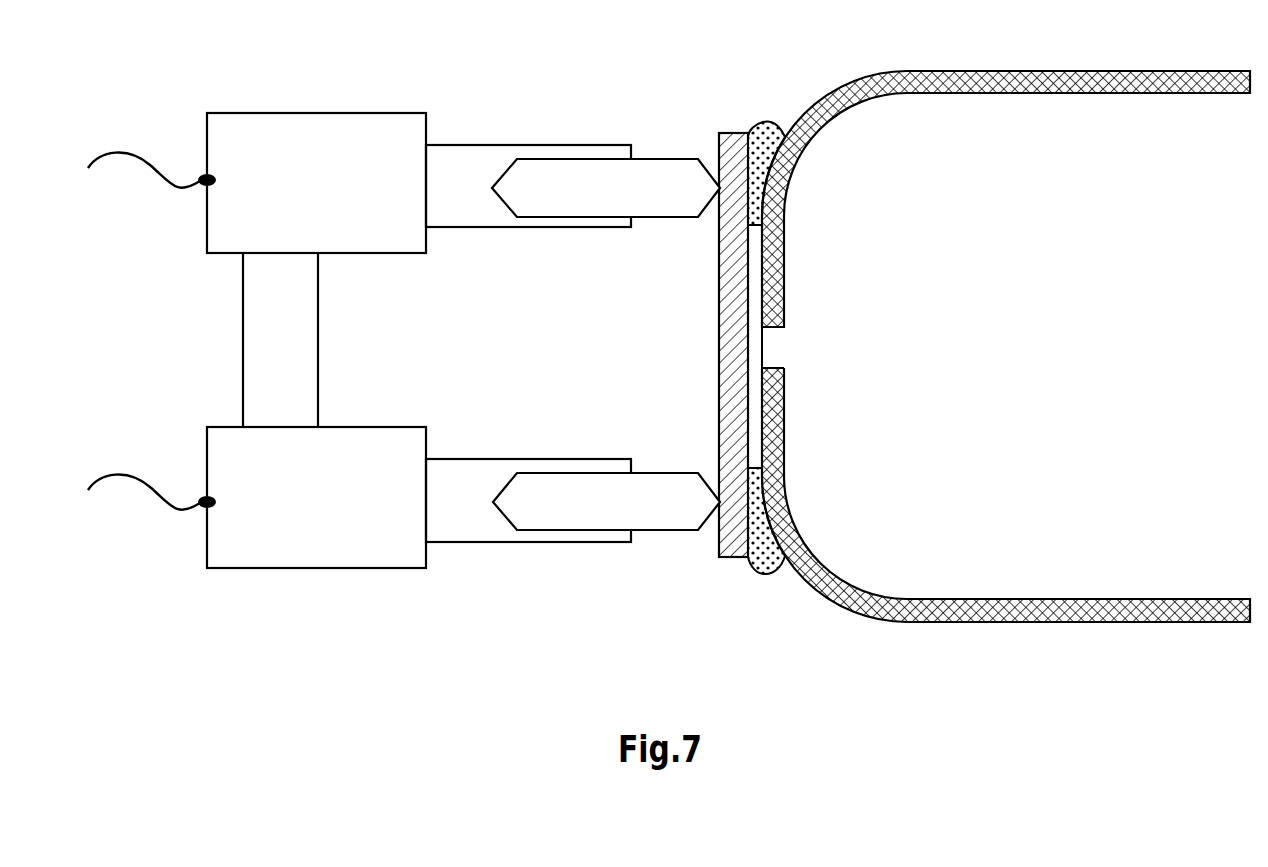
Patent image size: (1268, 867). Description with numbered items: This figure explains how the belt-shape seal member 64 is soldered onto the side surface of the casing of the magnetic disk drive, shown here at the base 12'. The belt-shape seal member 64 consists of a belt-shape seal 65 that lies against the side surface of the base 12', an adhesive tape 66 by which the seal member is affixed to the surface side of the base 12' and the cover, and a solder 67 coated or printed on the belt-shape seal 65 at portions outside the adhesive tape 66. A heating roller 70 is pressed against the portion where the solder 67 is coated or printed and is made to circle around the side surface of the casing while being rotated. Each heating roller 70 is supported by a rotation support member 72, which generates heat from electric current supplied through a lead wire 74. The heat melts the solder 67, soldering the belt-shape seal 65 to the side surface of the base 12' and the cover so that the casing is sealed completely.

The base 12' is at (1005, 392).
The belt-shape seal member 64 is at (689, 348).
The belt-shape seal 65 is at (720, 254).
The adhesive tape 66 is at (753, 350).
The solder 67 is at (756, 123).
The heating roller 70 is at (650, 142).
The rotation support member 72 is at (297, 112).
The lead wire 74 is at (125, 152).